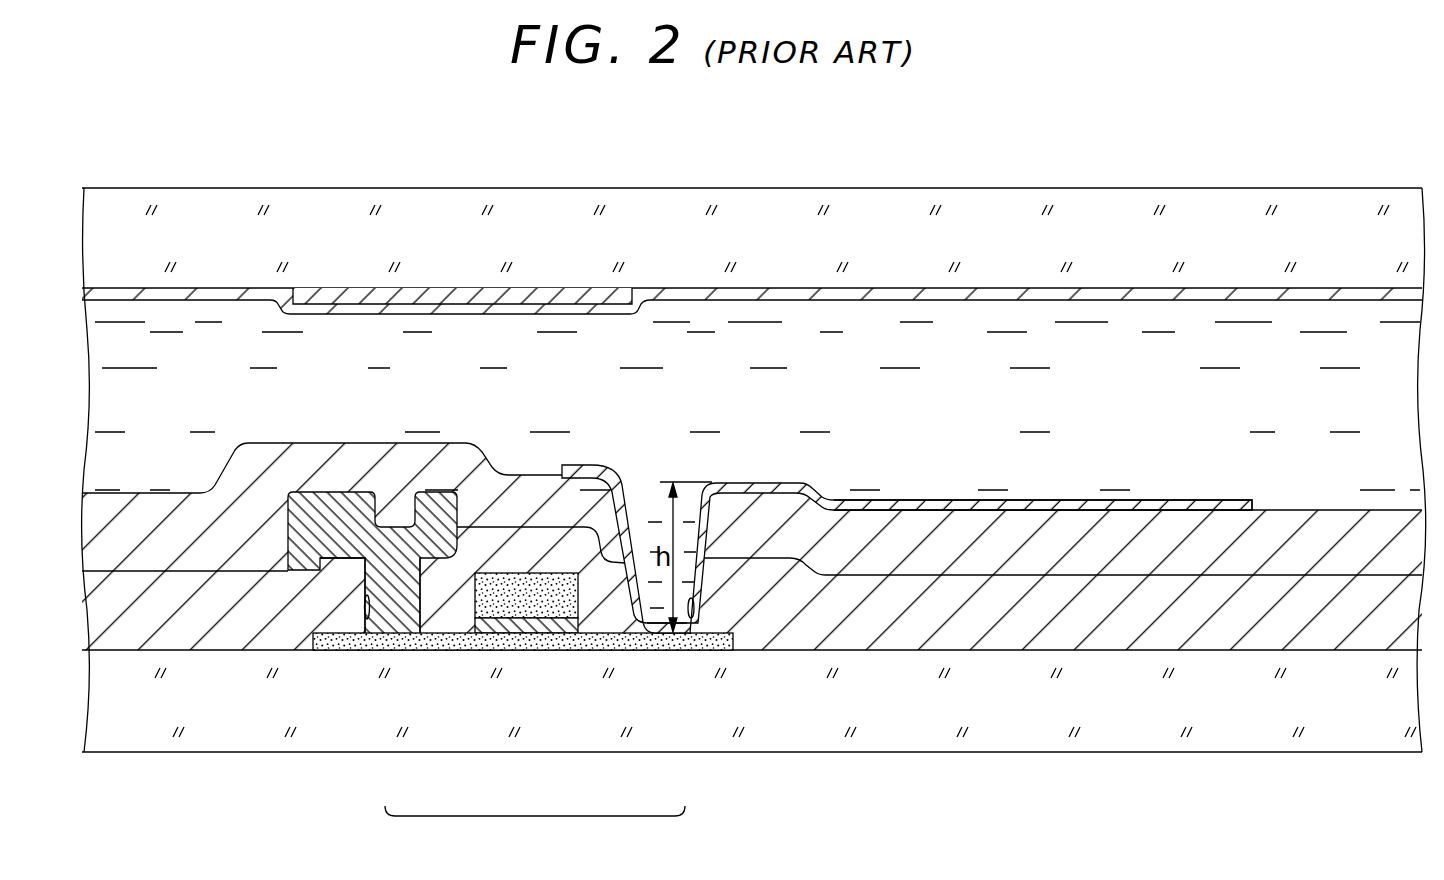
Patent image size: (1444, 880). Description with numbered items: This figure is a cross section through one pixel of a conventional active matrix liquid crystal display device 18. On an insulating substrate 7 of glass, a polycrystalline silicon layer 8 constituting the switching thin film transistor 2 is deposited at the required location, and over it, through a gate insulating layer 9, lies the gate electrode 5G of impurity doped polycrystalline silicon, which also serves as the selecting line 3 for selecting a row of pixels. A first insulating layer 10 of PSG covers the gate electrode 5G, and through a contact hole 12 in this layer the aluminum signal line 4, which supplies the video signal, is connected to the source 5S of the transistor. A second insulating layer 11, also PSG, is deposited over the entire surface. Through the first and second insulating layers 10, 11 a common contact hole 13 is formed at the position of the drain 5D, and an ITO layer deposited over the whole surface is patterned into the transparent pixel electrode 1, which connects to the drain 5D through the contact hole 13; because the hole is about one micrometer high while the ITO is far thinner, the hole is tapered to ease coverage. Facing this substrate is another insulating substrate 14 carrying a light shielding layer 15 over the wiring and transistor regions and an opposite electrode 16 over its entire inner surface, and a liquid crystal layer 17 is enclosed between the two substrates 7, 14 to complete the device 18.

The liquid crystal display device 18 is at (268, 137).
The insulating substrate 14 is at (1102, 215).
The light shielding layer 15 is at (527, 288).
The opposite electrode 16 is at (892, 300).
The liquid crystal layer 17 is at (1313, 380).
The insulating substrate 7 is at (1298, 745).
The first insulating layer 10 is at (128, 640).
The second insulating layer 11 is at (131, 515).
The contact hole 12 is at (368, 640).
The signal line 4 is at (350, 500).
The source 5S is at (408, 603).
The gate electrode 5G is at (520, 715).
The selecting line 3 is at (484, 620).
The drain 5D is at (657, 650).
The polycrystalline silicon layer 8 is at (567, 650).
The gate insulating layer 9 is at (516, 633).
The contact hole 13 is at (690, 645).
The transparent pixel electrode 1 is at (1141, 505).
The thin film transistor 2 is at (552, 845).